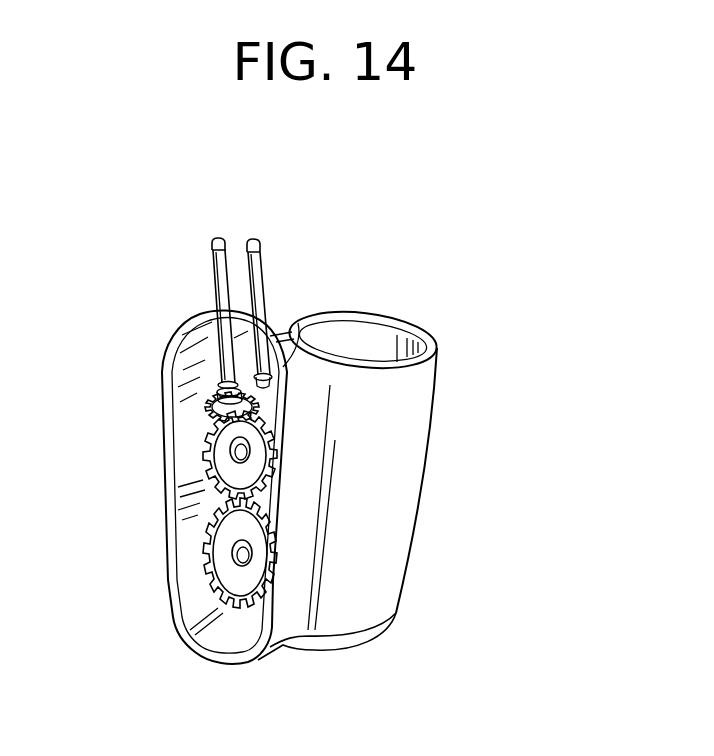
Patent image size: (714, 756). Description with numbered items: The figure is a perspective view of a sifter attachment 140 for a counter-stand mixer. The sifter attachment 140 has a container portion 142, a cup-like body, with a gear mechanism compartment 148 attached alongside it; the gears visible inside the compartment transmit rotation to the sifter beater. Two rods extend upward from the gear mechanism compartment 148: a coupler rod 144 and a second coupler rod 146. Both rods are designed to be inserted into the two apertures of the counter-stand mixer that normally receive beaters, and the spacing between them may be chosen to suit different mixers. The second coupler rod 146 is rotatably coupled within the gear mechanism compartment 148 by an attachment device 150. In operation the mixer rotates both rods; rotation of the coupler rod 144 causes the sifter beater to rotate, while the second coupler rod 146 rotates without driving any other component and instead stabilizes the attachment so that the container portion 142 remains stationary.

The sifter attachment 140 is at (465, 238).
The container portion 142 is at (380, 342).
The coupler rod 144 is at (224, 237).
The second coupler rod 146 is at (263, 255).
The gear mechanism compartment 148 is at (163, 369).
The attachment device 150 is at (289, 333).